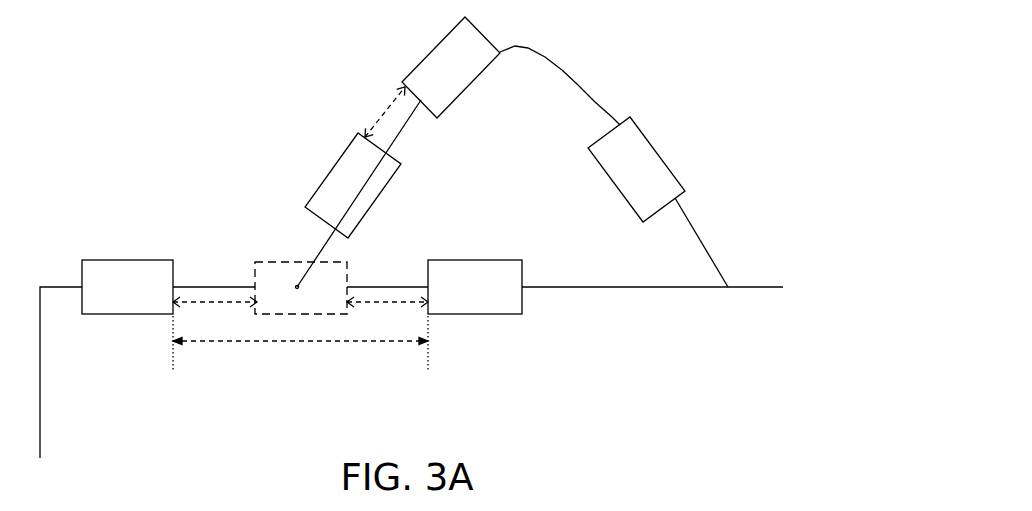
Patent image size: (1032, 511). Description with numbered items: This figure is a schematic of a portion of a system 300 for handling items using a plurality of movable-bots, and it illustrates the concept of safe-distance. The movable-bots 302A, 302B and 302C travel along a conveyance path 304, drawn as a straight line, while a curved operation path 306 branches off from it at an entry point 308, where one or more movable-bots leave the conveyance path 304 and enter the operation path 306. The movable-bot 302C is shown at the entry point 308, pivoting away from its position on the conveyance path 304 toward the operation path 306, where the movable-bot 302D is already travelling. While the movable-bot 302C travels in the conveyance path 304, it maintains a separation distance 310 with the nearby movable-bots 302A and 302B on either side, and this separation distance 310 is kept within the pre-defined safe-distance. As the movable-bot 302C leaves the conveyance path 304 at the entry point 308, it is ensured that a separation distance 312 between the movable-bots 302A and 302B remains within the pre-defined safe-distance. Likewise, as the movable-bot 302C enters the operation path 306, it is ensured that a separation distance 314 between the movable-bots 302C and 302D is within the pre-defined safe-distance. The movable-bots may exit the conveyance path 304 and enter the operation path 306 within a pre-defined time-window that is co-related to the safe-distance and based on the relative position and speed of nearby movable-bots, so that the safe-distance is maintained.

The system 300 is at (697, 50).
The movable-bot 302A is at (124, 243).
The movable-bot 302B is at (475, 239).
The movable-bot 302C is at (327, 195).
The movable-bot 302D is at (424, 65).
The conveyance path 304 is at (411, 372).
The operation path 306 is at (614, 166).
The entry point 308 is at (334, 343).
The separation distance 310 is at (316, 341).
The separation distance 312 is at (300, 363).
The separation distance 314 is at (368, 96).